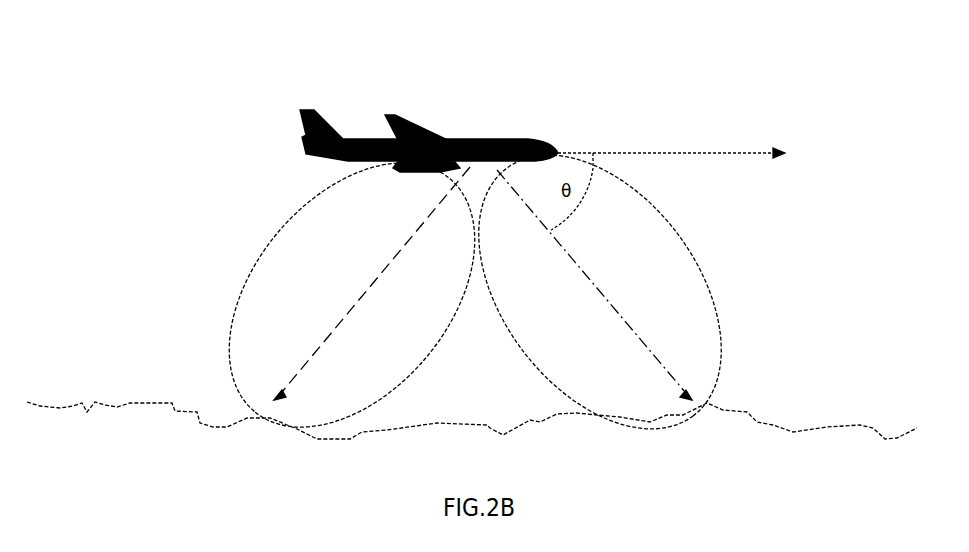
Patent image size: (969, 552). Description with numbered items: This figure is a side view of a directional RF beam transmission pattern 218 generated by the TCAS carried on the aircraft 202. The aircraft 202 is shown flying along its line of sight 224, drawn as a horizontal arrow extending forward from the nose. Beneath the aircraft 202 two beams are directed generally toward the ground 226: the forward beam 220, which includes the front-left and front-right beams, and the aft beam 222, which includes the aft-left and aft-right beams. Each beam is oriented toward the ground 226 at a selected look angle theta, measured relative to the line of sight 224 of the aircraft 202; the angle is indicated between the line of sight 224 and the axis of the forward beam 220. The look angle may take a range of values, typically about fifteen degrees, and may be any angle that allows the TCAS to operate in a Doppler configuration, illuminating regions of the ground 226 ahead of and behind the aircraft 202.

The aircraft sensing scenario 218 is at (295, 58).
The aircraft 202 is at (483, 139).
The line of sight 224 is at (686, 153).
The aft beam 222 is at (352, 295).
The forward beam 220 is at (599, 292).
The ground 226 is at (755, 413).